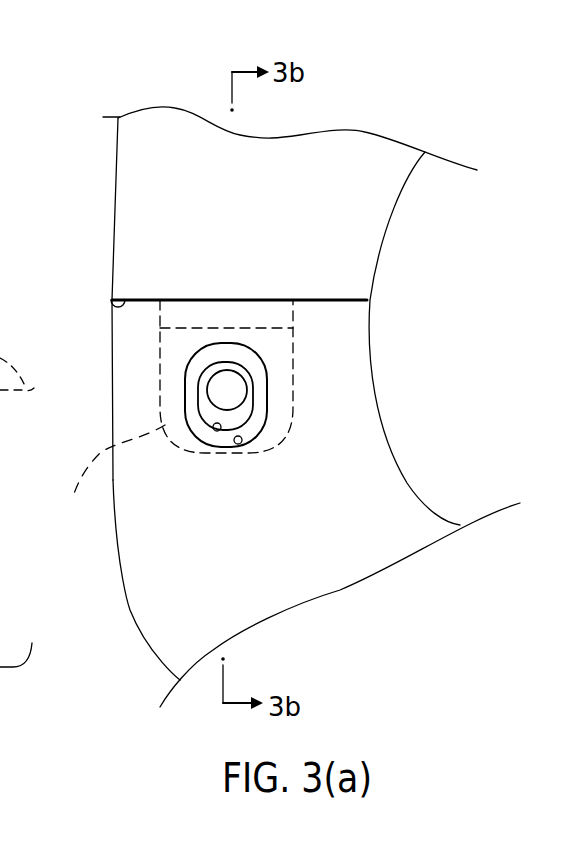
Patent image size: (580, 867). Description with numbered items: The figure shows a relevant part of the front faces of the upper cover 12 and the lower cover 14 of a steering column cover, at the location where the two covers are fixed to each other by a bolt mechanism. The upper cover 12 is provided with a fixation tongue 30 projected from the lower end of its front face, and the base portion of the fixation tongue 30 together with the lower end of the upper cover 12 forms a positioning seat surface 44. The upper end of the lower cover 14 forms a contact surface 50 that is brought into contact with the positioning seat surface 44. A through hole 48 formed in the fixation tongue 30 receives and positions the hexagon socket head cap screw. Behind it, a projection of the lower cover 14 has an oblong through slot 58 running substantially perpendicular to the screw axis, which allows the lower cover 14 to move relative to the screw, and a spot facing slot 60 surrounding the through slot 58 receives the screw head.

The upper cover 12 is at (133, 200).
The lower cover 14 is at (147, 613).
The fixation tongue 30 is at (109, 480).
The positioning seat surface 44 is at (110, 313).
The through hole 48 is at (236, 397).
The contact surface 50 is at (337, 298).
The through slot 58 is at (210, 436).
The spot facing slot 60 is at (246, 447).